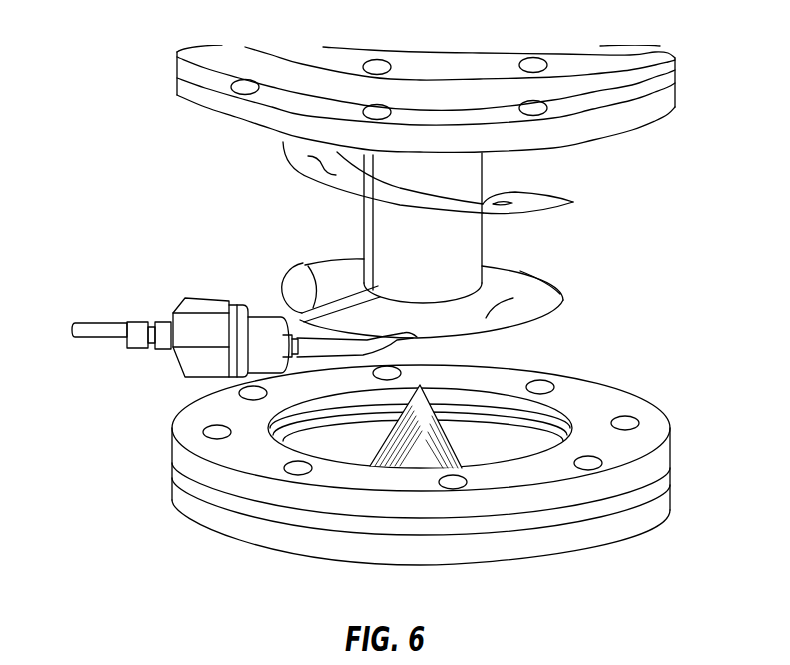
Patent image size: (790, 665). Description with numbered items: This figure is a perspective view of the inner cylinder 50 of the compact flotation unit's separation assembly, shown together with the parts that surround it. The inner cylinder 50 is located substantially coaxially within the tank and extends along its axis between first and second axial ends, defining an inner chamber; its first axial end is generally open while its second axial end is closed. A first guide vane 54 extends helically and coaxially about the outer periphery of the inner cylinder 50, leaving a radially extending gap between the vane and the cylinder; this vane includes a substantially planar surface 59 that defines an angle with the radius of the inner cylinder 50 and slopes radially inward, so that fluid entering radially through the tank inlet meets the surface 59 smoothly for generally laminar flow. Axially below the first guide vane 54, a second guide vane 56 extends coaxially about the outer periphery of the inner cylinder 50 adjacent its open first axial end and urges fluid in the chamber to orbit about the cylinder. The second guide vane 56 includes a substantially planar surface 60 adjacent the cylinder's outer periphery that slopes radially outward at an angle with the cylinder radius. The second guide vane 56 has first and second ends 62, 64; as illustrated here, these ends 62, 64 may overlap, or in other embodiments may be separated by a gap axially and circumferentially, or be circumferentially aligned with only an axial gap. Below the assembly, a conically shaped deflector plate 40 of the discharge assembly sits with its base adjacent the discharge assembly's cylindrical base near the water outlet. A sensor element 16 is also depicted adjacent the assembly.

The sensor probe 16 is at (100, 322).
The deflector plate 40 is at (430, 440).
The inner cylinder 50 is at (483, 246).
The first guide vane 54 is at (573, 202).
The second guide vane 56 is at (563, 302).
The planar surface 59 is at (352, 153).
The planar surface 60 is at (535, 327).
The first end 62 is at (303, 263).
The second end 64 is at (425, 339).